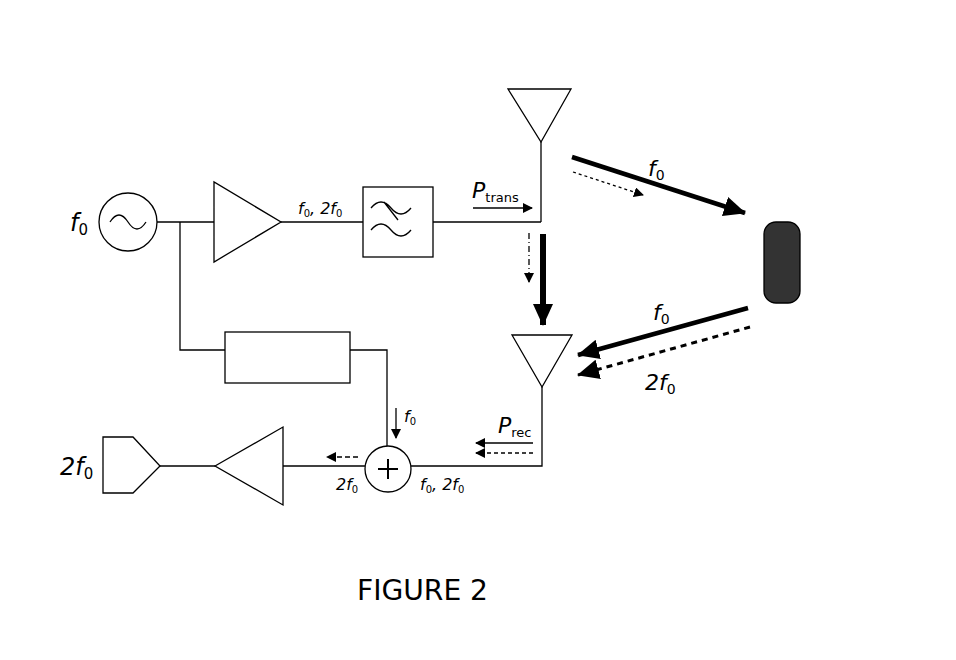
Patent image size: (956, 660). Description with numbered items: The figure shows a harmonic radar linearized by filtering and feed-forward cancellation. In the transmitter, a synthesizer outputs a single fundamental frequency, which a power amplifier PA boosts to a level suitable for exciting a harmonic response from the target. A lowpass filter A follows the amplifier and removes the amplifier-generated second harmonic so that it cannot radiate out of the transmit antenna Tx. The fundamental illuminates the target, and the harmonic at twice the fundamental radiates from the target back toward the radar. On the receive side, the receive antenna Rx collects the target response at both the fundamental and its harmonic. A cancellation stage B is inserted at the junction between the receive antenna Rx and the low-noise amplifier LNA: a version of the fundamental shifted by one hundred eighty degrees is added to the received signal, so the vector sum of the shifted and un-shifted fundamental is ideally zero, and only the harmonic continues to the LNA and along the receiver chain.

The lowpass filter A is at (398, 193).
The feed-forward cancellation circuit B is at (287, 329).
The power amplifier PA is at (247, 222).
The low-noise amplifier LNA is at (249, 466).
The transmit antenna Tx is at (539, 115).
The receive antenna Rx is at (542, 361).
The element target is at (782, 262).